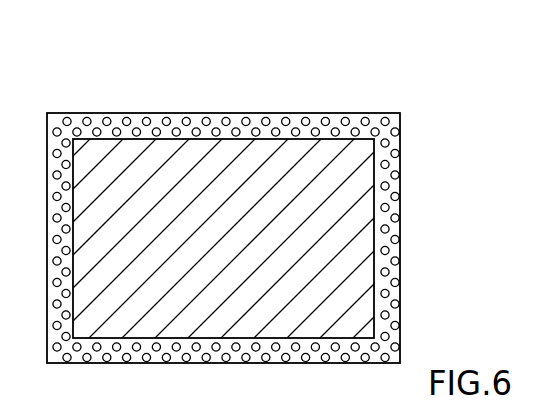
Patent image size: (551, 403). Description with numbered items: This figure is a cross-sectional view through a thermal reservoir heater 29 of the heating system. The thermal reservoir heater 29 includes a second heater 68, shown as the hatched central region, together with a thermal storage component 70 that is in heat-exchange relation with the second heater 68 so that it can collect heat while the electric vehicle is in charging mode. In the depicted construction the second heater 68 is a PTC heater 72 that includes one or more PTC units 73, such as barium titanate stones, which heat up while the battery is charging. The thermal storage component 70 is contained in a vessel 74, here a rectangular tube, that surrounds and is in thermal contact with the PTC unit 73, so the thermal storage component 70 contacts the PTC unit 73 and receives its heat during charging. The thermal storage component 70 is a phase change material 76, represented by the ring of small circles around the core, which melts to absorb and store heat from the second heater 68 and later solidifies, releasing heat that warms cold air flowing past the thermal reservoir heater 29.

The thermal reservoir heater 29 is at (275, 194).
The second heater 68 is at (275, 238).
The thermal storage component 70 is at (226, 209).
The PTC heater 72 is at (337, 242).
The PTC unit 73 is at (342, 285).
The vessel 74 is at (259, 112).
The phase change material 76 is at (88, 117).